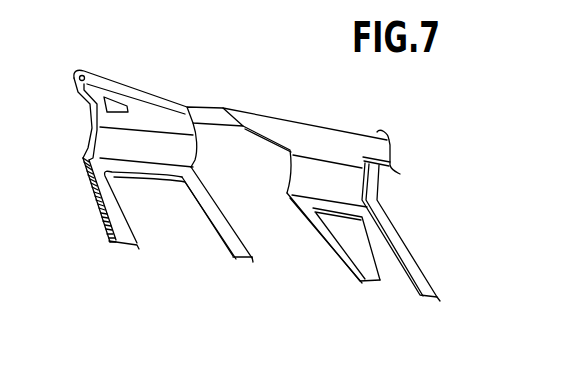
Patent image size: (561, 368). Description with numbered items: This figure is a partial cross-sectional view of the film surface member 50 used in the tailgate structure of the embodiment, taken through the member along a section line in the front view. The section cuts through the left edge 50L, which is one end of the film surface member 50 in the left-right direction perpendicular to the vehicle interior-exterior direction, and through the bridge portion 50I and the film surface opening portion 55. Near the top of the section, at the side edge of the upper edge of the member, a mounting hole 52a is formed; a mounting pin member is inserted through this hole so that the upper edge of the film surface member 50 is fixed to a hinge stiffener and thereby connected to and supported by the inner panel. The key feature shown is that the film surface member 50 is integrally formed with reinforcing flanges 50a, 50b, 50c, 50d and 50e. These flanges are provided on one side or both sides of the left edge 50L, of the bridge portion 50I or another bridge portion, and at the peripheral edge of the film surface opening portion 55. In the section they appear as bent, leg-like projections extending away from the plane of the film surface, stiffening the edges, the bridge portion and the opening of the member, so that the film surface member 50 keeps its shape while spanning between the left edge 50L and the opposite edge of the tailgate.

The film surface member 50 is at (274, 191).
The mounting hole 52a is at (93, 72).
The left edge 50L is at (100, 202).
The reinforcing flange 50a is at (102, 232).
The reinforcing flange 50b is at (229, 256).
The reinforcing flange 50c is at (253, 259).
The reinforcing flange 50d is at (380, 283).
The reinforcing flange 50e is at (435, 285).
The bridge portion 50I is at (214, 220).
The film surface opening portion 55 is at (306, 215).